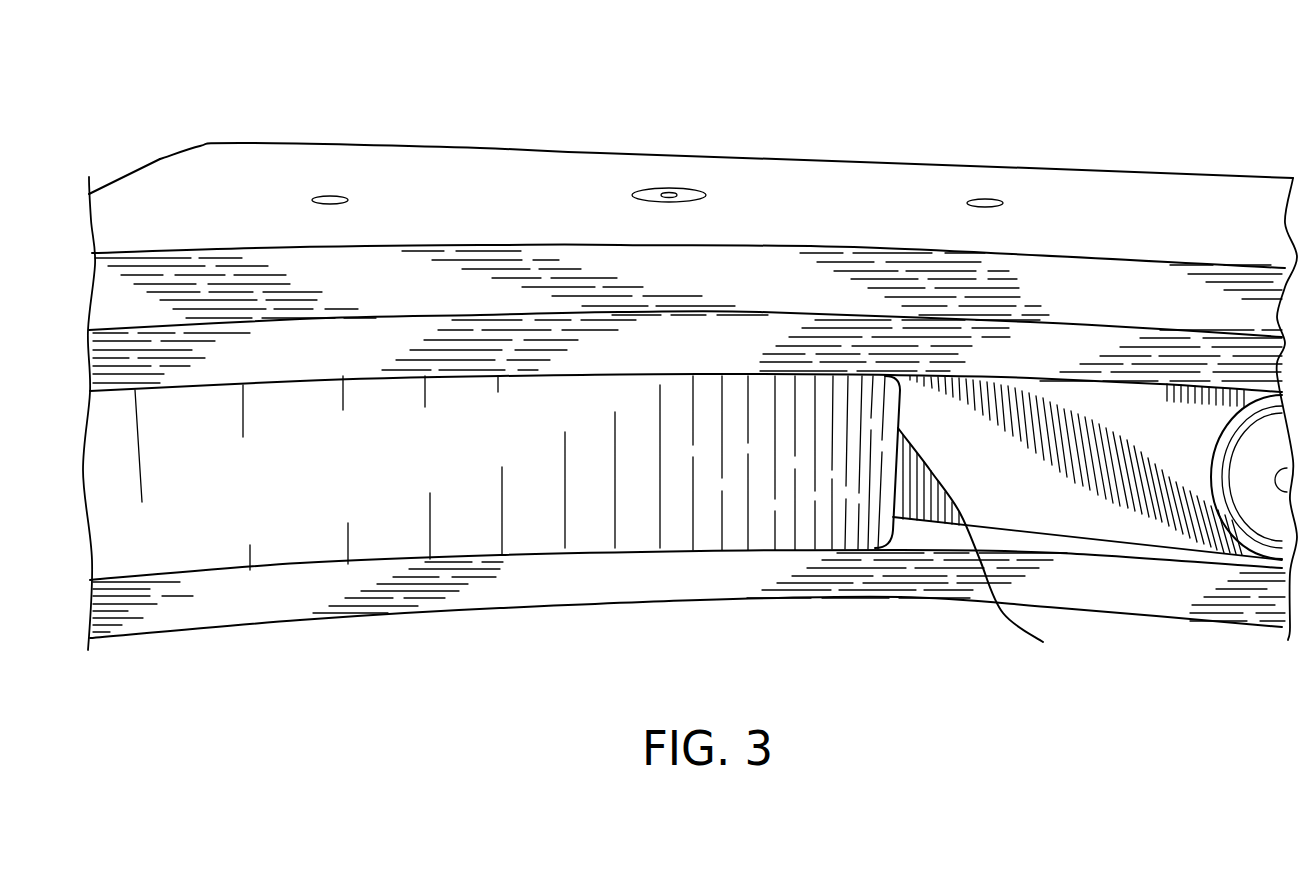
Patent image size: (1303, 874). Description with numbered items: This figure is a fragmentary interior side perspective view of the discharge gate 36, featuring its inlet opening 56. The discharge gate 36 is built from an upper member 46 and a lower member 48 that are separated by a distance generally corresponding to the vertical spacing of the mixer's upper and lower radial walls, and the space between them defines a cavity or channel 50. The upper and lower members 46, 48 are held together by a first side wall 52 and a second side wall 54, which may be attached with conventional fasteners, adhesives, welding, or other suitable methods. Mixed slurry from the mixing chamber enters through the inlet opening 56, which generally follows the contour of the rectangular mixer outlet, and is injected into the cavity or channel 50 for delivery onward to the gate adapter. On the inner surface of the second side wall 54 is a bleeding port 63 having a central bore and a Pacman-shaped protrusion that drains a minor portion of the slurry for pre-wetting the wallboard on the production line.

The discharge gate 36 is at (348, 143).
The upper member 46 is at (808, 198).
The lower member 48 is at (600, 580).
The cavity or channel 50 is at (893, 467).
The first side wall 52 is at (284, 491).
The second side wall 54 is at (1160, 436).
The inlet opening 56 is at (984, 544).
The bleeding port 63 is at (1252, 530).